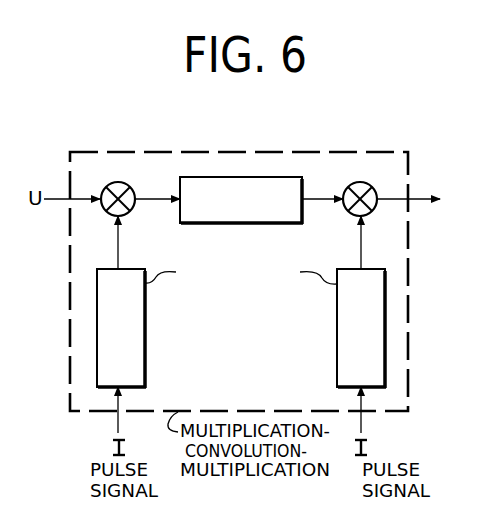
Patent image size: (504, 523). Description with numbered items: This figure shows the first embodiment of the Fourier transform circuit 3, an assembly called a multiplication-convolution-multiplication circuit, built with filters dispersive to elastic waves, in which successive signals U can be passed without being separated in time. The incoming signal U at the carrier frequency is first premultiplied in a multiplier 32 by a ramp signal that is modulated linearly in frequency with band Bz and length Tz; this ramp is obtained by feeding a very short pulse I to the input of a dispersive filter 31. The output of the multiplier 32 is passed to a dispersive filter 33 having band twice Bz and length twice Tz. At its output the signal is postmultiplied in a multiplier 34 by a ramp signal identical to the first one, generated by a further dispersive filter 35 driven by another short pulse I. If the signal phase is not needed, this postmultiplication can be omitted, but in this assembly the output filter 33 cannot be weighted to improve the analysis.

The Fourier transform circuit 3 is at (162, 152).
The dispersive filter 31 is at (153, 324).
The multiplier 32 is at (129, 187).
The dispersive filter 33 is at (188, 226).
The multiplier 34 is at (349, 187).
The dispersive filter 35 is at (324, 324).